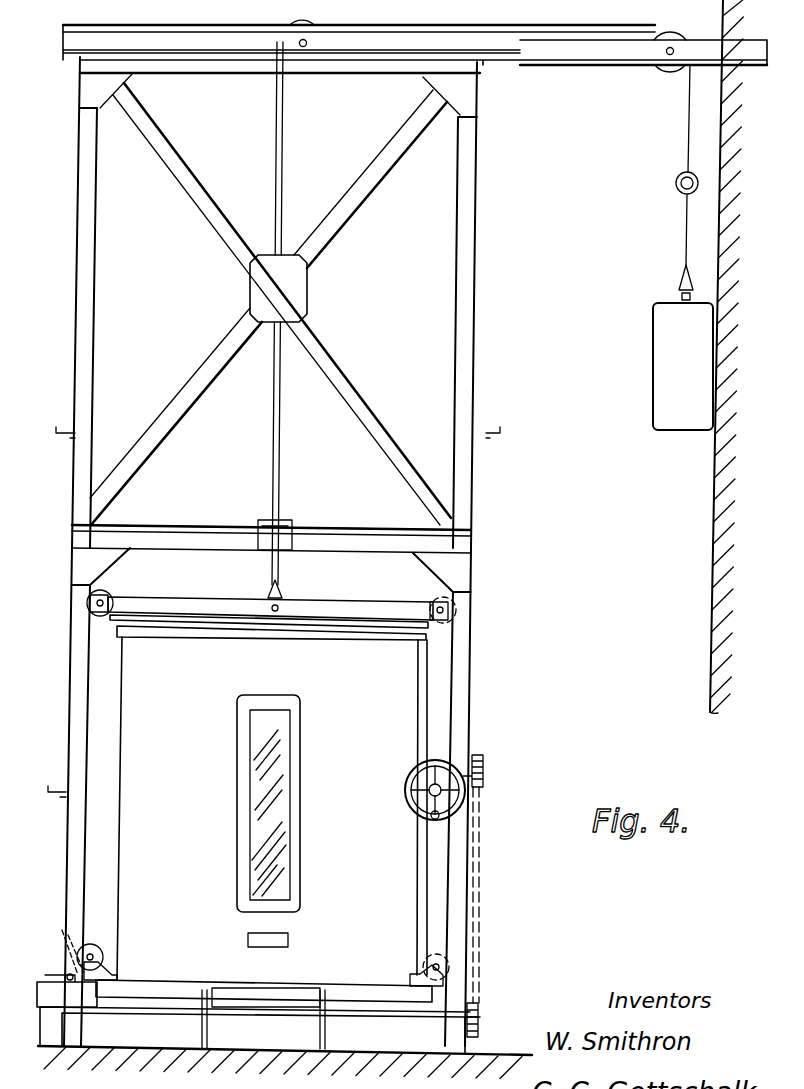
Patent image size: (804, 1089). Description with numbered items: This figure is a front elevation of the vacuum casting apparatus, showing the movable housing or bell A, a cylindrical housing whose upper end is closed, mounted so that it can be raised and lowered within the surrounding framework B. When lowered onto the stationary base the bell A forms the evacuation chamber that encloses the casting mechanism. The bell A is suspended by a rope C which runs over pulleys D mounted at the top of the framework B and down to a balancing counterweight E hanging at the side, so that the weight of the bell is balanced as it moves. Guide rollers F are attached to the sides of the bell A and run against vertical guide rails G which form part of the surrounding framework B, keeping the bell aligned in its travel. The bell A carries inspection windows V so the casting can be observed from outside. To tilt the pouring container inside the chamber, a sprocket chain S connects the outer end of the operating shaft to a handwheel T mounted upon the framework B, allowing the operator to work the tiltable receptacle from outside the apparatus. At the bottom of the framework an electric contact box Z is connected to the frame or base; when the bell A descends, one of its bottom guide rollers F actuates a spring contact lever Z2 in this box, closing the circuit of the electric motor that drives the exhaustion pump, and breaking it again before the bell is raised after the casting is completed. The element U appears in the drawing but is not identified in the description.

The movable housing or bell A is at (213, 648).
The surrounding framework B is at (93, 357).
The rope C is at (284, 158).
The pulleys D is at (302, 22).
The balancing counterweight E is at (656, 363).
The guide rollers F is at (455, 603).
The vertical guide rails G is at (470, 668).
The sprocket chain S is at (479, 893).
The handwheel T is at (456, 810).
The base support U is at (253, 993).
The inspection windows V is at (268, 803).
The electric contact box Z is at (47, 990).
The spring contact lever Z2 is at (66, 940).